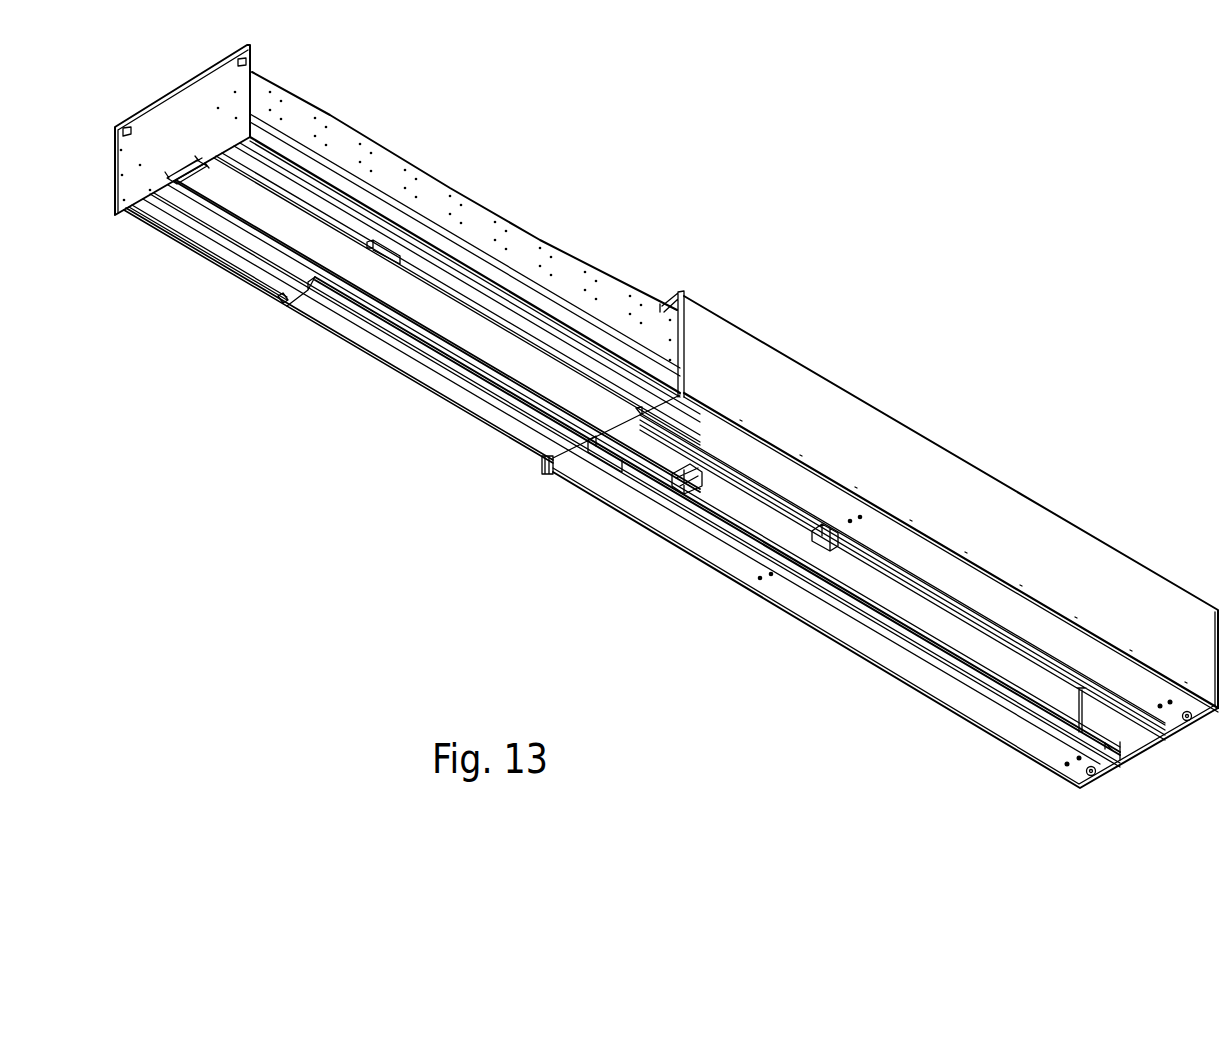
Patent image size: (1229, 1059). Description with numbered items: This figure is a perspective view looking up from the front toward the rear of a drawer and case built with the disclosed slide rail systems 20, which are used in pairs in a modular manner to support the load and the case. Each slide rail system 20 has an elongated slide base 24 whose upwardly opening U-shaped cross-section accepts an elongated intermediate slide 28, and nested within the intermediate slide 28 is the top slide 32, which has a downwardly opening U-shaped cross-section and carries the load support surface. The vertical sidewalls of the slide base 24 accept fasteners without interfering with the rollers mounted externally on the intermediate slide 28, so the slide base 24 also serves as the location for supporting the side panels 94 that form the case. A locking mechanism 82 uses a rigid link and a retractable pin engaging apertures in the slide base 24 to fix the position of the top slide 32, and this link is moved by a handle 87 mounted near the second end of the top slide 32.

The slide rail system 20 is at (612, 453).
The slide base 24 is at (688, 555).
The intermediate slide 28 is at (382, 355).
The top slide 32 is at (228, 248).
The locking mechanism 82 is at (694, 458).
The handle 87 is at (180, 162).
The side panel 94 is at (848, 442).